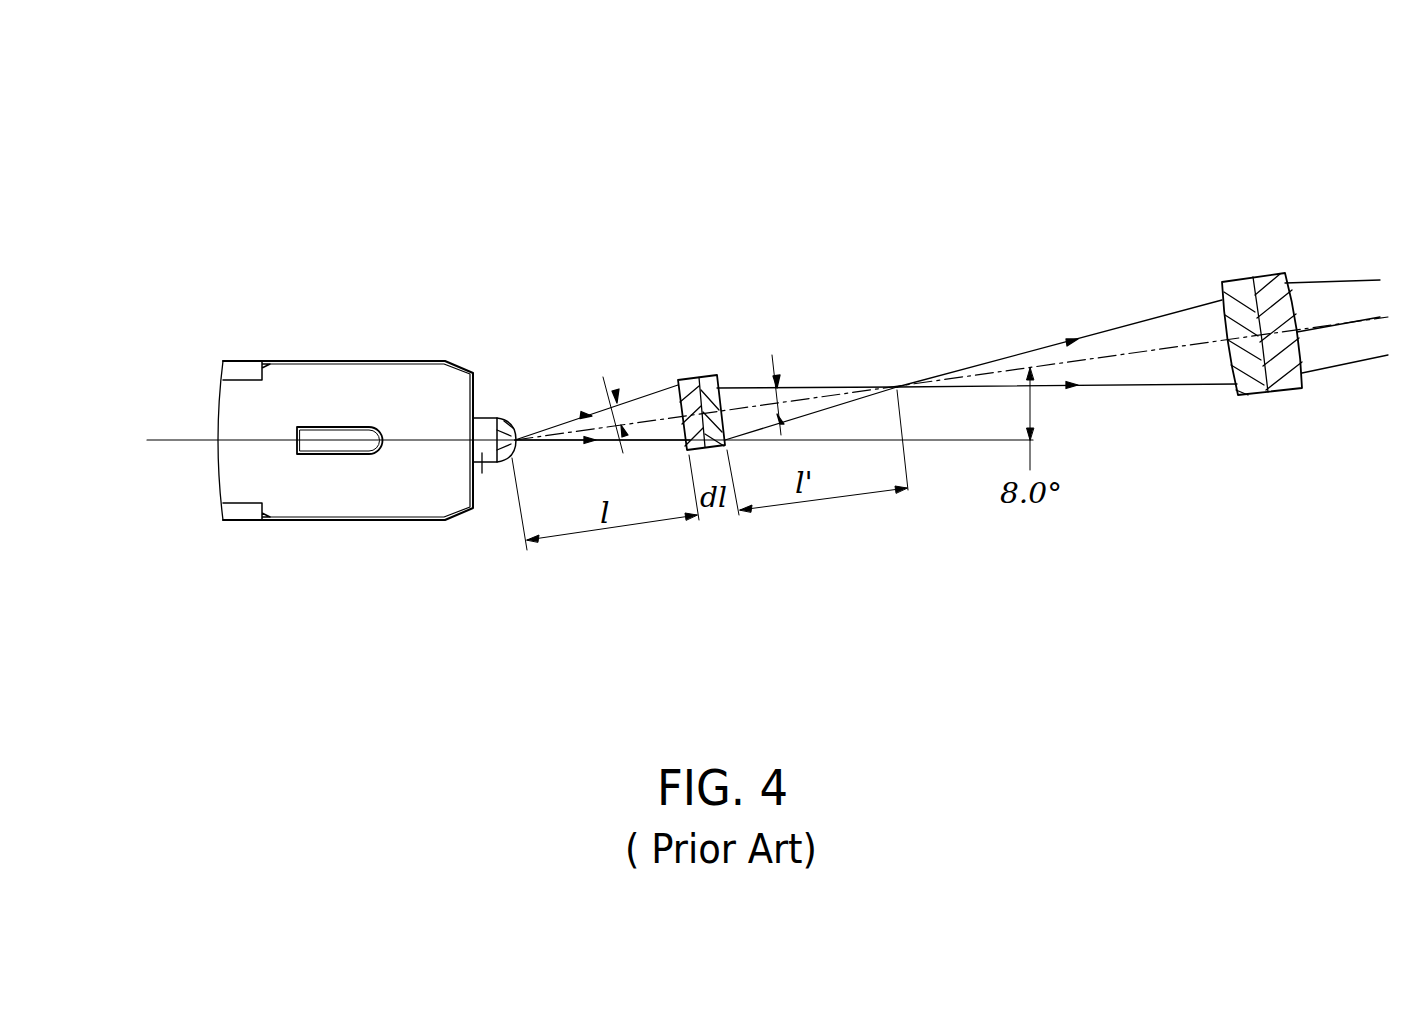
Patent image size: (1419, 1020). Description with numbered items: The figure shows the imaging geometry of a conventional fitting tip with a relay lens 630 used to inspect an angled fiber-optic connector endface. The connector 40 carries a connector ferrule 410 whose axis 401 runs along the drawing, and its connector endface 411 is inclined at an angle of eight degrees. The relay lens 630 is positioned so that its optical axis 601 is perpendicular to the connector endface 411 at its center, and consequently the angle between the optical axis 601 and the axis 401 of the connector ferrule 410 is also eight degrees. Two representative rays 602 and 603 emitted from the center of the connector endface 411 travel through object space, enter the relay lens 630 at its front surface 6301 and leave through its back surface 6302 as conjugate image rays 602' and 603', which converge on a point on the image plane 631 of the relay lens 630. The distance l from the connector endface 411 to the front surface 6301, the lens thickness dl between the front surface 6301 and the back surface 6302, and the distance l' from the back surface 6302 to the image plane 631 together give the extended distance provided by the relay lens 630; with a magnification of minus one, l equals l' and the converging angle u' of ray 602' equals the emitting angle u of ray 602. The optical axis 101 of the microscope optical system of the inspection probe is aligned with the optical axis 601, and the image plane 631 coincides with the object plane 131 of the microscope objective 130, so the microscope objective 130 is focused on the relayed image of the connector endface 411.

The laser diode module 40 is at (333, 348).
The axis of the connector ferrule 401 is at (415, 440).
The connector ferrule 410 is at (477, 473).
The connector endface 411 is at (513, 447).
The optical axis of the relay lens 601 is at (617, 398).
The representative ray 602 is at (560, 292).
The representative ray 603 is at (602, 569).
The relay lens 630 is at (762, 270).
The front surface of the relay lens 6301 is at (677, 385).
The back surface of the relay lens 6302 is at (720, 385).
The conjugate ray 602' is at (845, 263).
The conjugate ray 603' is at (829, 481).
The image plane of the relay lens 631 is at (898, 425).
The object plane of the microscope objective 131 is at (903, 383).
The microscope objective 130 is at (1250, 268).
The optical axis of the microscope optical system 101 is at (1107, 357).